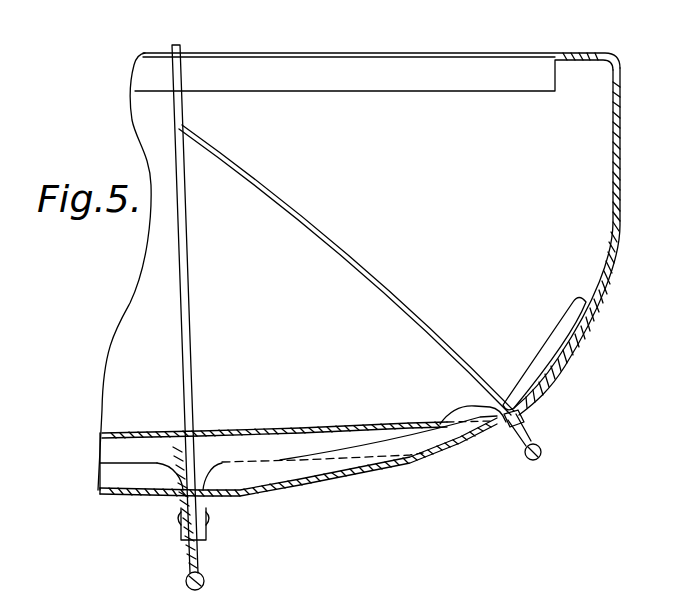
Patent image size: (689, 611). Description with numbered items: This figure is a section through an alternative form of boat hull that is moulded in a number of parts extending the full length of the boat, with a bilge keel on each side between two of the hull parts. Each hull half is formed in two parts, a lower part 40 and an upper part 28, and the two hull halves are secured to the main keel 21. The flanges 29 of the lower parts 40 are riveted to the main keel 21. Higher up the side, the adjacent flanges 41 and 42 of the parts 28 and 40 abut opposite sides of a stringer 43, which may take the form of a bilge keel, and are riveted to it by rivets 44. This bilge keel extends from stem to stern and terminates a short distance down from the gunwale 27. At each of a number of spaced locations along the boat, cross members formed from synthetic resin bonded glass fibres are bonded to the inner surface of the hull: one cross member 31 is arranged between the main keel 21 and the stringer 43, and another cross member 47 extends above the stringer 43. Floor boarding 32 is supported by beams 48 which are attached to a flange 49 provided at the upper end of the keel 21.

The main keel 21 is at (187, 228).
The gunwale 27 is at (587, 53).
The hull part 28 is at (580, 348).
The flange 29 is at (180, 532).
The cross member 31 is at (283, 466).
The floor boarding 32 is at (385, 422).
The hull part 40 is at (395, 477).
The flange 41 is at (297, 225).
The flange 42 is at (530, 430).
The stringer 43 is at (494, 412).
The rivets 44 is at (522, 415).
The cross member 47 is at (552, 330).
The beams 48 is at (222, 446).
The flange 49 is at (192, 463).